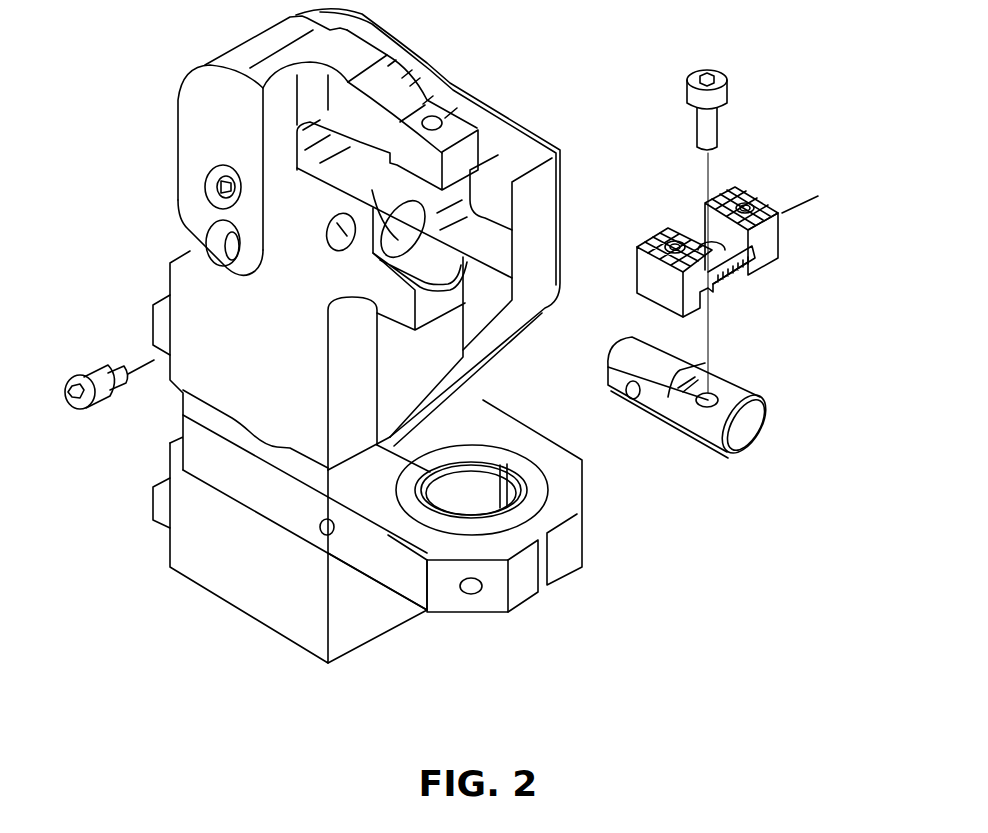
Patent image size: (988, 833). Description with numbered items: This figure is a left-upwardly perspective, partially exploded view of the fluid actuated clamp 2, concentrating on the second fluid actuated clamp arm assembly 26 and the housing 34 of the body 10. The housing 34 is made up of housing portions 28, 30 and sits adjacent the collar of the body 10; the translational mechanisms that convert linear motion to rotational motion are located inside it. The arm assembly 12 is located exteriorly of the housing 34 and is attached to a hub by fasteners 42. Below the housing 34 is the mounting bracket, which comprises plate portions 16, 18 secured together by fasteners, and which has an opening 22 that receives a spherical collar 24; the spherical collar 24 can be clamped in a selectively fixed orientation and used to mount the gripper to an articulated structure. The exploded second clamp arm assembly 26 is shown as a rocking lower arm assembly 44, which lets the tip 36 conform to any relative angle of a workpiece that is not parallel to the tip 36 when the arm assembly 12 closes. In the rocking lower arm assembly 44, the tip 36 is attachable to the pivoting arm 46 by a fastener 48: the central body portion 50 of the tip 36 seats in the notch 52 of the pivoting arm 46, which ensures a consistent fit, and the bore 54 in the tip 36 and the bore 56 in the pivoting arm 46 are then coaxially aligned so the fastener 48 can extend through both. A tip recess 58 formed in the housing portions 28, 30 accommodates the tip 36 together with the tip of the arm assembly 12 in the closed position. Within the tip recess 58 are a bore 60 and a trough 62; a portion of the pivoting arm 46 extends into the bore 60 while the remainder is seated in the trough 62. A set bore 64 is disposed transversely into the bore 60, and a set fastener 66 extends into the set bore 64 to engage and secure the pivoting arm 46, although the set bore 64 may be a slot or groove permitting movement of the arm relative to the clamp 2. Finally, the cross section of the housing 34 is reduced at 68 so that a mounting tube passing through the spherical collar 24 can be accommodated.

The clamp 2 is at (112, 194).
The body 10 is at (268, 606).
The arm assembly 12 is at (196, 95).
The plate portion 16 is at (560, 466).
The plate portion 18 is at (390, 580).
The opening 22 is at (412, 474).
The spherical collar 24 is at (515, 497).
The second clamp arm assembly 26 is at (820, 365).
The housing portion 28 is at (185, 272).
The housing portion 30 is at (507, 260).
The housing 34 is at (480, 75).
The tip 36 is at (783, 248).
The fasteners 42 is at (222, 188).
The rocking lower arm assembly 44 is at (780, 163).
The pivoting arm 46 is at (750, 430).
The fastener 48 is at (715, 127).
The central body portion 50 is at (735, 289).
The notch 52 is at (712, 395).
The bore 54 is at (705, 245).
The bore 56 is at (703, 404).
The tip recess 58 is at (487, 195).
The bore 60 is at (385, 237).
The trough 62 is at (395, 276).
The set bore 64 is at (337, 231).
The set fastener 66 is at (82, 375).
The reduced cross section 68 is at (490, 386).